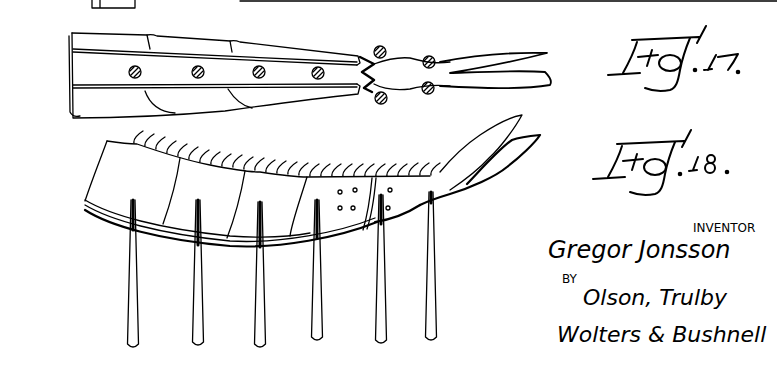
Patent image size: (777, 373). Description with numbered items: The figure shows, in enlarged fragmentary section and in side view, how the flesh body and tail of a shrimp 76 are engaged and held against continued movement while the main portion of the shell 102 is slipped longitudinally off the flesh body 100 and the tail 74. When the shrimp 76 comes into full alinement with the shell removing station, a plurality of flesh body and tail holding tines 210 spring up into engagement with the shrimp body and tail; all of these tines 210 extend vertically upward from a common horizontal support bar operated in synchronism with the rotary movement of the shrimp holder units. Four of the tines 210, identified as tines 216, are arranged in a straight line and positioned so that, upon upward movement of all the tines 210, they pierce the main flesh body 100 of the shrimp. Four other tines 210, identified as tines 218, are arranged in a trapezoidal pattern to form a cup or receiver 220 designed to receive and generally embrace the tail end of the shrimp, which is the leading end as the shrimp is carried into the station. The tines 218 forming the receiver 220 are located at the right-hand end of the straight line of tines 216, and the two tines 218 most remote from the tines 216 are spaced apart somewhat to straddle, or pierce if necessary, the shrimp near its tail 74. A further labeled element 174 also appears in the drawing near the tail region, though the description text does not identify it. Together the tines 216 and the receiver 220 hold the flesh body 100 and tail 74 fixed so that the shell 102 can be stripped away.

In FIG. 17, the tail 74 is at (502, 59).
In FIG. 18, the tail 74 is at (493, 173).
In FIG. 17, the shrimp 76 is at (285, 39).
In FIG. 17, the flesh body 100 is at (110, 73).
In FIG. 18, the flesh body 100 is at (127, 228).
In FIG. 17, the shell 102 is at (218, 100).
In FIG. 18, the shell 102 is at (108, 177).
In FIG. 17, the neck portion 174 is at (403, 55).
In FIG. 17, the flesh body and tail holding tines 210 is at (87, 104).
In FIG. 18, the flesh body and tail holding tines 210 is at (446, 307).
In FIG. 17, the tines 216 is at (320, 67).
In FIG. 18, the tines 216 is at (313, 312).
In FIG. 17, the tines 218 is at (376, 102).
In FIG. 18, the tines 218 is at (383, 266).
In FIG. 17, the cup or receiver 220 is at (380, 64).
In FIG. 18, the cup or receiver 220 is at (412, 225).